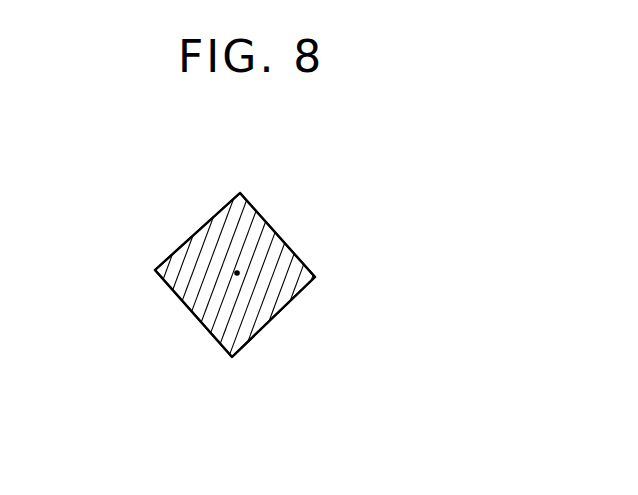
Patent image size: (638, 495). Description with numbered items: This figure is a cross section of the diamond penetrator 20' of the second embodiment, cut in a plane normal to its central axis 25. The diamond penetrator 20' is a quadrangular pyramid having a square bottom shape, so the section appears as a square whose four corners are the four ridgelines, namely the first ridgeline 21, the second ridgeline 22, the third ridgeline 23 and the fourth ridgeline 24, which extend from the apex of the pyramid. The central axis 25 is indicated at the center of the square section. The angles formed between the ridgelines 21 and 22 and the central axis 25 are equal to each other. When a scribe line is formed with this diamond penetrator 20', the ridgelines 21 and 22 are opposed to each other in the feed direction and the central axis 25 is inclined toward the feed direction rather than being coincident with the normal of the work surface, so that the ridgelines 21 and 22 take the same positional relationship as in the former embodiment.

The diamond penetrator 20' is at (302, 273).
The first ridgeline 21 is at (155, 270).
The second ridgeline 22 is at (315, 277).
The third ridgeline 23 is at (232, 357).
The fourth ridgeline 24 is at (240, 193).
The central axis 25 is at (237, 273).